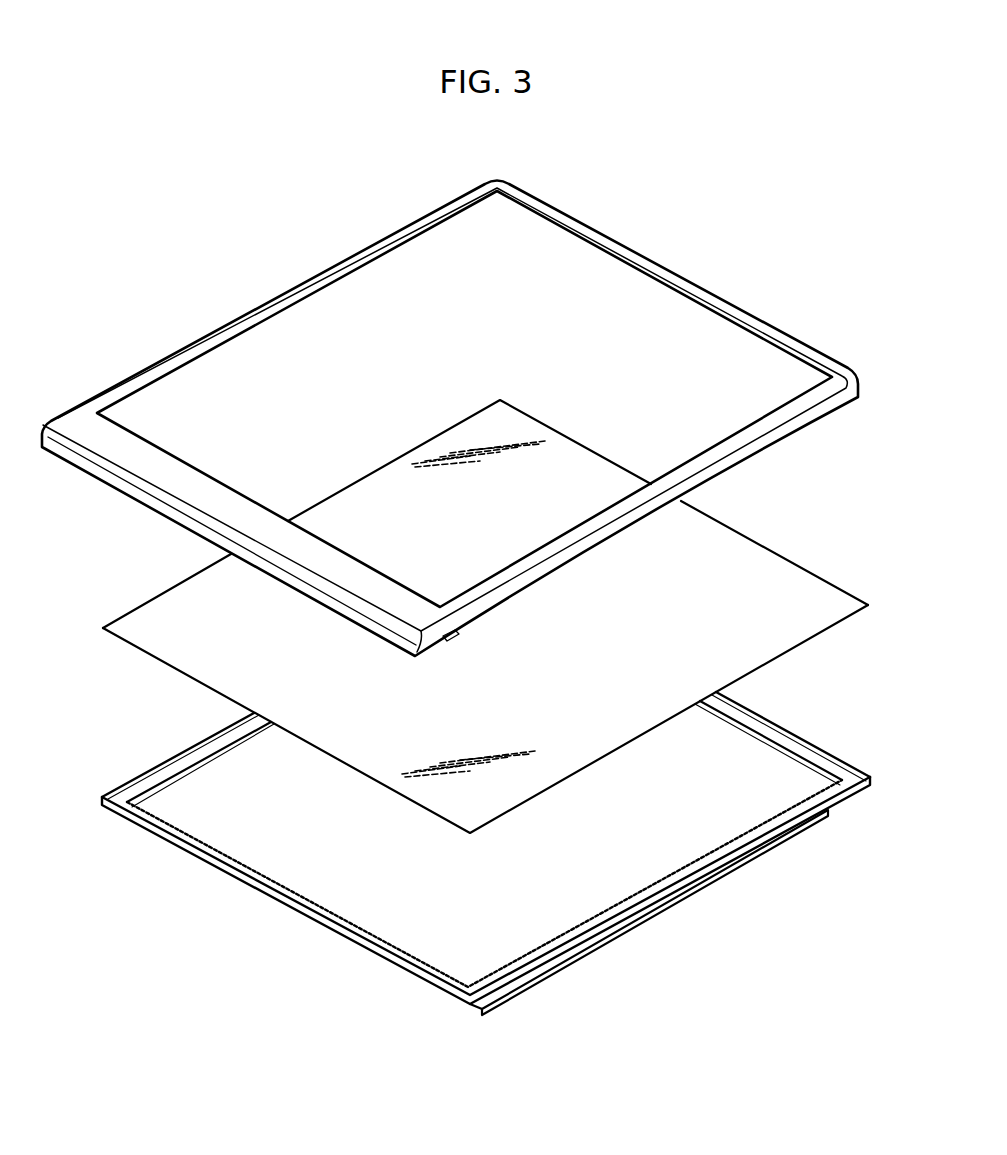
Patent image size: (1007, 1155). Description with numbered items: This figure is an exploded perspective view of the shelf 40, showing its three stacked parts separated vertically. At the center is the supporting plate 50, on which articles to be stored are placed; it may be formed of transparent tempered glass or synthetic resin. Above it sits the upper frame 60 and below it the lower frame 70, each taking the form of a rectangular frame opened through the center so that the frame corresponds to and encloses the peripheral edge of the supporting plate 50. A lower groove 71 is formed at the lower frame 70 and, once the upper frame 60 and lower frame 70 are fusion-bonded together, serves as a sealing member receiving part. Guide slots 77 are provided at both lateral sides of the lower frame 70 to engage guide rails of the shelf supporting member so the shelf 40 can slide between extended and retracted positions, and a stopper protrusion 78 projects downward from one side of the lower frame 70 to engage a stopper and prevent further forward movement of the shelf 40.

The shelf 40 is at (261, 206).
The supporting plate 50 is at (147, 610).
The upper frame 60 is at (100, 398).
The lower frame 70 is at (473, 848).
The lower groove 71 is at (837, 762).
The guide slot 77 is at (503, 989).
The stopper protrusion 78 is at (672, 900).